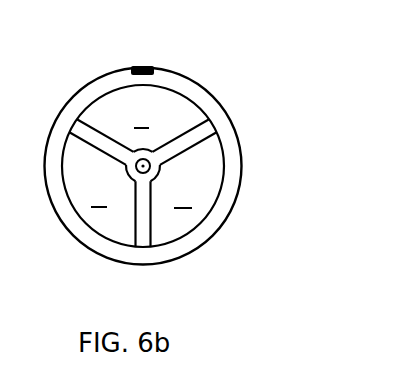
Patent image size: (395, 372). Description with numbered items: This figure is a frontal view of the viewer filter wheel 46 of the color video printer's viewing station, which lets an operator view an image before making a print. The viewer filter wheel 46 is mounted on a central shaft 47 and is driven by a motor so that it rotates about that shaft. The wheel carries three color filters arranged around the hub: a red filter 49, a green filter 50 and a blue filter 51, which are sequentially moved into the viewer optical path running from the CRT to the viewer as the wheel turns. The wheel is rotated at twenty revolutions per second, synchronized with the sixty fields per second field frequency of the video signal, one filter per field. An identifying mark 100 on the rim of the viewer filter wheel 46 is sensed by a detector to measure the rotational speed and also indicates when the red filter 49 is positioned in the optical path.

The viewer filter wheel 46 is at (151, 267).
The shaft 47 is at (150, 166).
The red filter 49 is at (214, 176).
The blue filter 51 is at (177, 103).
The green filter 50 is at (100, 222).
The identifying mark 100 is at (134, 65).